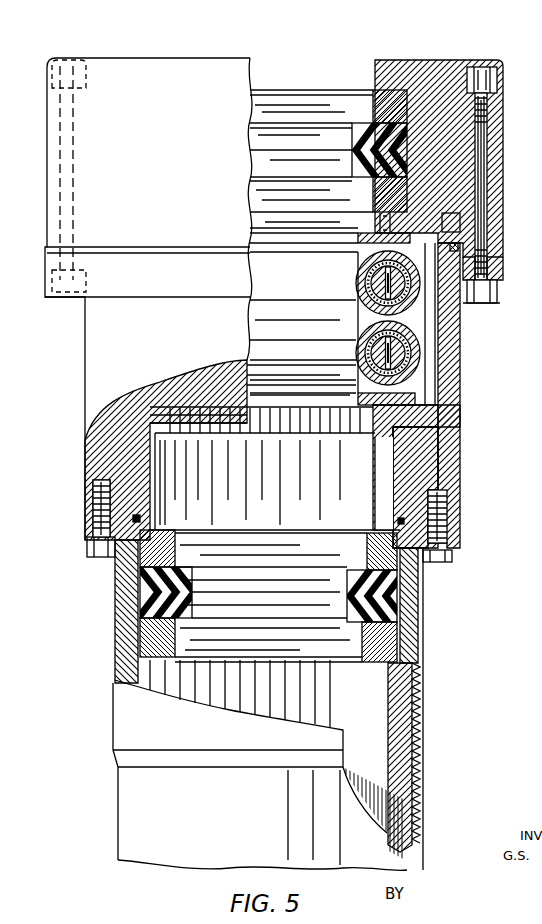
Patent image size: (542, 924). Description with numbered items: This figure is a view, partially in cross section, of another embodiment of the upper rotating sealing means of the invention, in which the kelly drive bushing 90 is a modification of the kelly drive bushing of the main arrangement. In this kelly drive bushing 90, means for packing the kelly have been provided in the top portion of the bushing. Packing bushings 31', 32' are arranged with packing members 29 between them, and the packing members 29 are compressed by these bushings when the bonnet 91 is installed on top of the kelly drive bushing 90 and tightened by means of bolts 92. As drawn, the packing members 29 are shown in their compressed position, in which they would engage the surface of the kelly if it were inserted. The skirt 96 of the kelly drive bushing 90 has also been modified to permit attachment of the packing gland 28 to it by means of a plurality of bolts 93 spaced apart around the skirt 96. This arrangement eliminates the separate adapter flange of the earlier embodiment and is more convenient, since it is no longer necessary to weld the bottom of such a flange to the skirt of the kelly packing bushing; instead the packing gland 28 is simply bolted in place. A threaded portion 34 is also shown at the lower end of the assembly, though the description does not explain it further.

The packing gland 28 is at (424, 606).
The packing members 29 is at (356, 150).
The packing bushing 31' is at (273, 419).
The packing bushing 32' is at (273, 320).
The threaded sleeve 34 is at (430, 742).
The kelly drive bushing 90 is at (500, 265).
The bonnet 91 is at (424, 72).
The bolts 92 is at (488, 162).
The bolts 93 is at (448, 550).
The skirt 96 is at (460, 413).